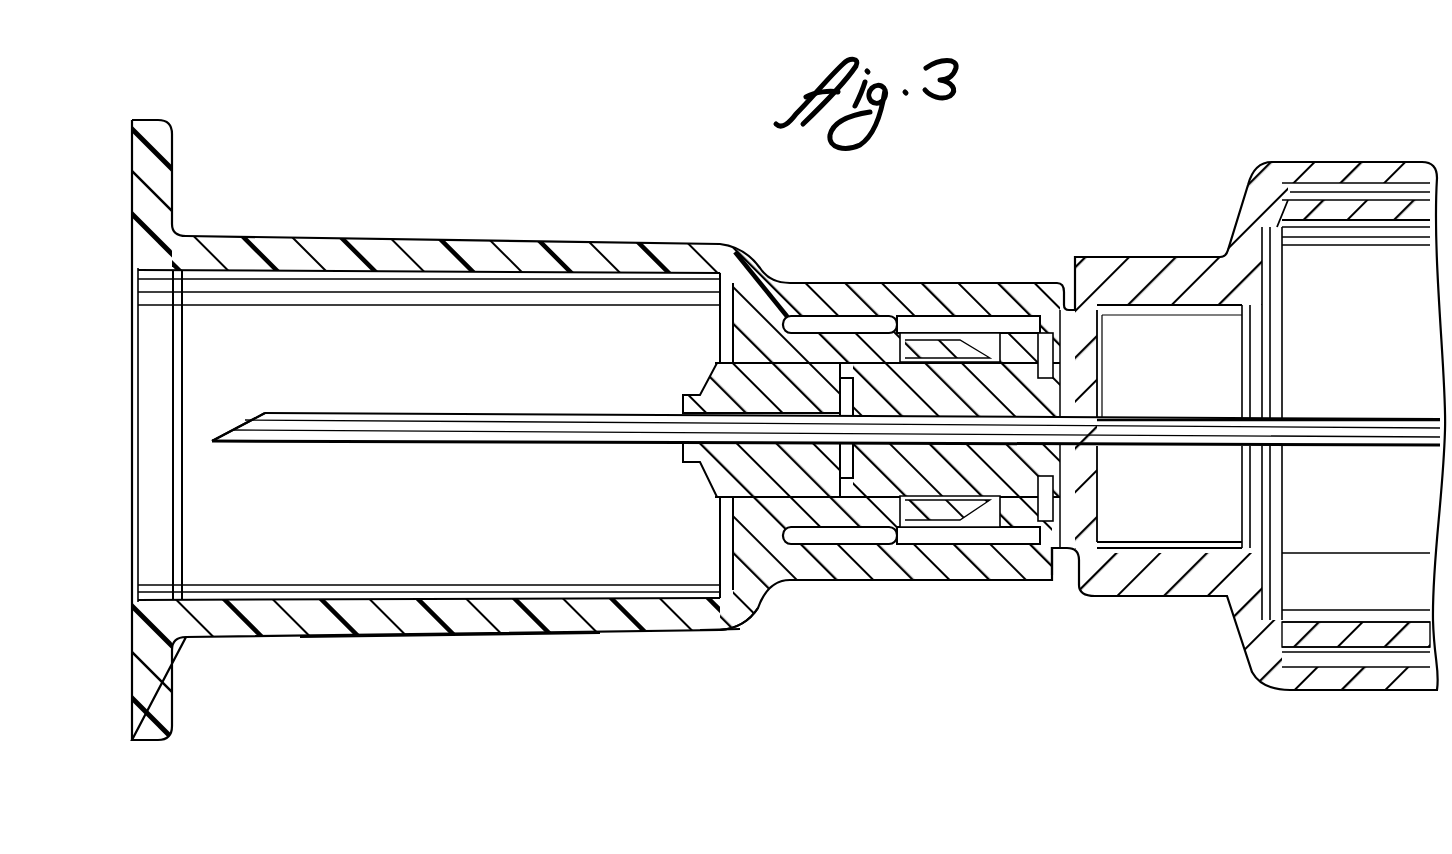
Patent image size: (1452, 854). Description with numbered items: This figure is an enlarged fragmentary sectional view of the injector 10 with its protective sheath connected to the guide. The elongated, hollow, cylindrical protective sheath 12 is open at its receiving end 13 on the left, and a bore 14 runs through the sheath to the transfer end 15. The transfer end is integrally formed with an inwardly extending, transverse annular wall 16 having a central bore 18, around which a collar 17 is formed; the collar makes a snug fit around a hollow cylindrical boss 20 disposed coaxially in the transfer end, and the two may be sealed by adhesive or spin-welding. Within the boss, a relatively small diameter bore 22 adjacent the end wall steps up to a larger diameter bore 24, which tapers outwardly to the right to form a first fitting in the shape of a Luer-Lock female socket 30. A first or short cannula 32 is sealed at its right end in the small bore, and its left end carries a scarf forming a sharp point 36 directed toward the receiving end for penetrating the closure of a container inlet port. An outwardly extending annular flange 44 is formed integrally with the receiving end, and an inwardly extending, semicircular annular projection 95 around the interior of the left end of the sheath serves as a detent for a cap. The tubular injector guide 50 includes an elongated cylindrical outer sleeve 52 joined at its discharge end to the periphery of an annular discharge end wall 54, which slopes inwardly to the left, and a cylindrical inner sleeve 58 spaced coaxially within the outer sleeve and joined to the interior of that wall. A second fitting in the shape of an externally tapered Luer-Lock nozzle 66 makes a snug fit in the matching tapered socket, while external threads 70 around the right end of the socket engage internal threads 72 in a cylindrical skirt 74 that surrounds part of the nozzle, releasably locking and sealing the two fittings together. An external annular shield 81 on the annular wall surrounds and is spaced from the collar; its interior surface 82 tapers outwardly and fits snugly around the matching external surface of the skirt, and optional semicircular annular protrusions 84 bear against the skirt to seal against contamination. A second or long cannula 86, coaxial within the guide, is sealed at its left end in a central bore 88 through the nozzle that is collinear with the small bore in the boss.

The injector 10 is at (725, 638).
The protective sheath 12 is at (478, 640).
The receiving end 13 is at (198, 540).
The bore 14 is at (487, 600).
The transfer end 15 is at (740, 578).
The annular wall 16 is at (738, 530).
The collar 17 is at (862, 335).
The central bore 18 is at (732, 352).
The boss 20 is at (703, 470).
The small diameter bore 22 is at (683, 413).
The larger diameter bore 24 is at (1062, 392).
The Luer-Lock female socket 30 is at (965, 375).
The first cannula 32 is at (330, 413).
The sharp point 36 is at (216, 438).
The annular flange 44 is at (172, 182).
The injector guide 50 is at (1322, 160).
The outer sleeve 52 is at (1312, 692).
The discharge end wall 54 is at (1262, 586).
The inner sleeve 58 is at (1368, 638).
The Luer-Lock nozzle 66 is at (975, 380).
The external threads 70 is at (1095, 340).
The internal threads 72 is at (980, 548).
The skirt 74 is at (875, 545).
The shield 81 is at (905, 575).
The interior surface 82 is at (838, 316).
The annular protrusions 84 is at (1052, 555).
The second cannula 86 is at (1242, 455).
The central bore 88 is at (1050, 445).
The annular projection 95 is at (172, 585).